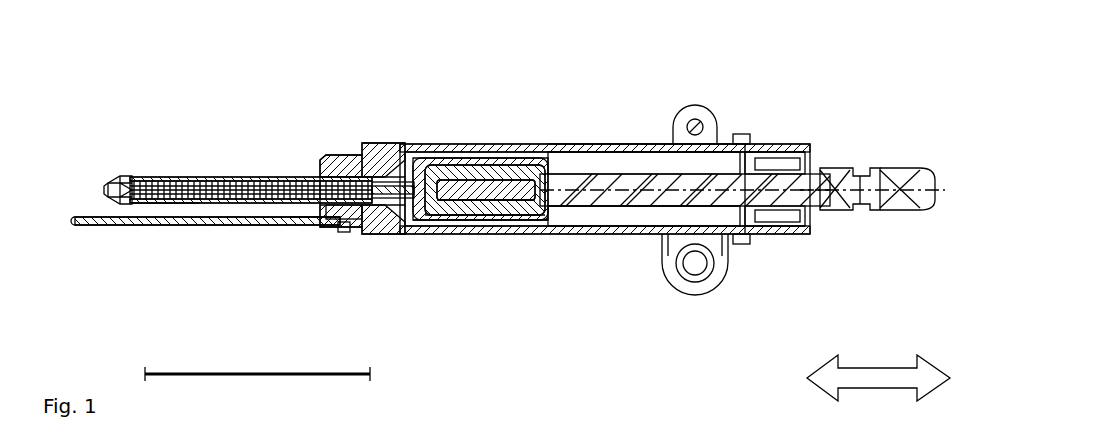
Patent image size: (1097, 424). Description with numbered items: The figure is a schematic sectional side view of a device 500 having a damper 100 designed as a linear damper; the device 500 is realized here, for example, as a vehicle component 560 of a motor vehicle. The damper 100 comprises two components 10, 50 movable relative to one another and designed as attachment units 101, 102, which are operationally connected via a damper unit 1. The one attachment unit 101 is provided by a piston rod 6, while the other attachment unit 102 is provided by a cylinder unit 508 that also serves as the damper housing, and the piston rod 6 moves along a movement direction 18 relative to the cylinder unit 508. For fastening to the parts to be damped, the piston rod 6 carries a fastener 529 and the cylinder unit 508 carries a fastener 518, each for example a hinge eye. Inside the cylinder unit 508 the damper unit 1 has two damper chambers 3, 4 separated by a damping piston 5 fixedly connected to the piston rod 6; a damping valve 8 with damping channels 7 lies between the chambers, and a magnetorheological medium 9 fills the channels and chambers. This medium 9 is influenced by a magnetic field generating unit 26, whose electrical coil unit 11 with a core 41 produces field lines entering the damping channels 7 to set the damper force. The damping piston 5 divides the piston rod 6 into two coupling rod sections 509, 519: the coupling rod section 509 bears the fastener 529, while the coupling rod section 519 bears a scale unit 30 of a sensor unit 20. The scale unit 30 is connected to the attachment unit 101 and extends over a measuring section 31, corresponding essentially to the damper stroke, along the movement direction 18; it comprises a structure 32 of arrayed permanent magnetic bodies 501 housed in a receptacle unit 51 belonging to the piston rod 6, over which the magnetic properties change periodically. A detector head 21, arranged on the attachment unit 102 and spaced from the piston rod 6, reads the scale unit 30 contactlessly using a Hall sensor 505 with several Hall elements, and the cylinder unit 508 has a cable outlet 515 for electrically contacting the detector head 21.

The device 500 is at (125, 63).
The vehicle component 560 is at (902, 78).
The damper 100 is at (787, 138).
The sensor unit 20 is at (298, 140).
The Hall sensor 505 is at (345, 232).
The detector head 21 is at (330, 238).
The damper chamber 3 is at (395, 235).
The component 10 is at (143, 170).
The scale unit 30 is at (165, 173).
The structure 32 is at (213, 172).
The magnetic bodies 501 is at (260, 175).
The attachment unit 101 is at (113, 172).
The piston rod 6 is at (110, 178).
The receptacle unit 51 is at (147, 212).
The cable outlet 515 is at (285, 226).
The coupling rod section 519 is at (173, 203).
The measuring section 31 is at (212, 373).
The damper unit 1 is at (423, 135).
The damping piston 5 is at (537, 140).
The damping channels 7 is at (473, 153).
The damping valve 8 is at (520, 150).
The magnetic field generating unit 26 is at (468, 215).
The core 41 is at (495, 210).
The electrical coil unit 11 is at (505, 215).
The attachment unit 102 is at (587, 138).
The cylinder unit 508 is at (615, 143).
The component 50 is at (643, 137).
The damper chamber 4 is at (608, 215).
The coupling rod section 509 is at (657, 207).
The fastener 518 is at (680, 115).
The magnetorheological medium 9 is at (750, 217).
The fastener 529 is at (905, 207).
The movement direction 18 is at (863, 367).